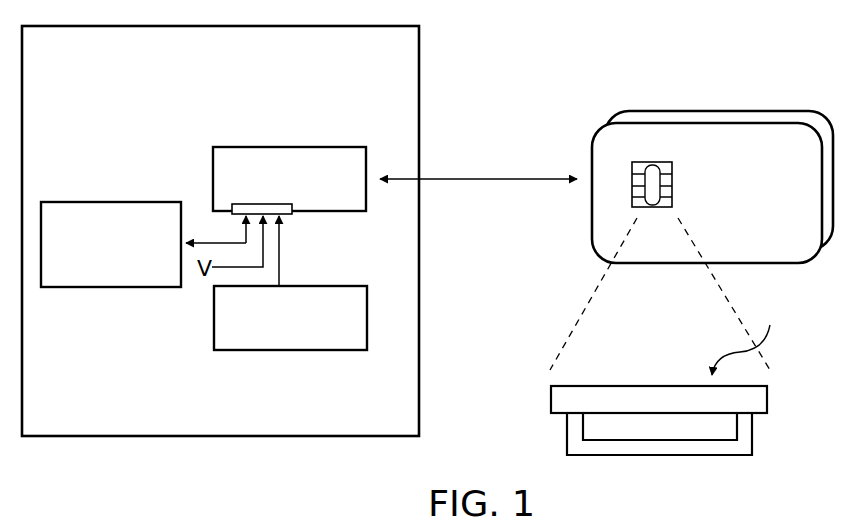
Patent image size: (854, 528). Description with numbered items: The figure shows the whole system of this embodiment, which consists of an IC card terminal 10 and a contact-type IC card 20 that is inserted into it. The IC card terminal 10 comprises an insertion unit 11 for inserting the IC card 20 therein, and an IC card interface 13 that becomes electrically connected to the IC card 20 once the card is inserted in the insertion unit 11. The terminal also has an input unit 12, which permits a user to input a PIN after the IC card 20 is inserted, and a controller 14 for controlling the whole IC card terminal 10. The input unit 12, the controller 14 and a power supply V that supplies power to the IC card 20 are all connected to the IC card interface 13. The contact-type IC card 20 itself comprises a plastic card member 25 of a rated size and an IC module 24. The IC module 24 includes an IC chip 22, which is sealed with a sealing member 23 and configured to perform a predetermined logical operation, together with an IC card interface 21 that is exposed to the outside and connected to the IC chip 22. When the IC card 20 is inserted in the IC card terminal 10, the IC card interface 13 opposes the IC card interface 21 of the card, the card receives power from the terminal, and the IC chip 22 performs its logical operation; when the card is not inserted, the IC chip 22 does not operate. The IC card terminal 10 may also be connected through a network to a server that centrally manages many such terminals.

The IC card terminal 10 is at (420, 55).
The insertion unit 11 is at (327, 146).
The input unit 12 is at (213, 320).
The IC card interface 13 is at (290, 217).
The controller 14 is at (107, 201).
The contact-type IC card 20 is at (696, 151).
The IC card interface 21 is at (652, 207).
The IC chip 22 is at (752, 424).
The sealing member 23 is at (752, 443).
The IC module 24 is at (748, 336).
The plastic card member 25 is at (743, 135).